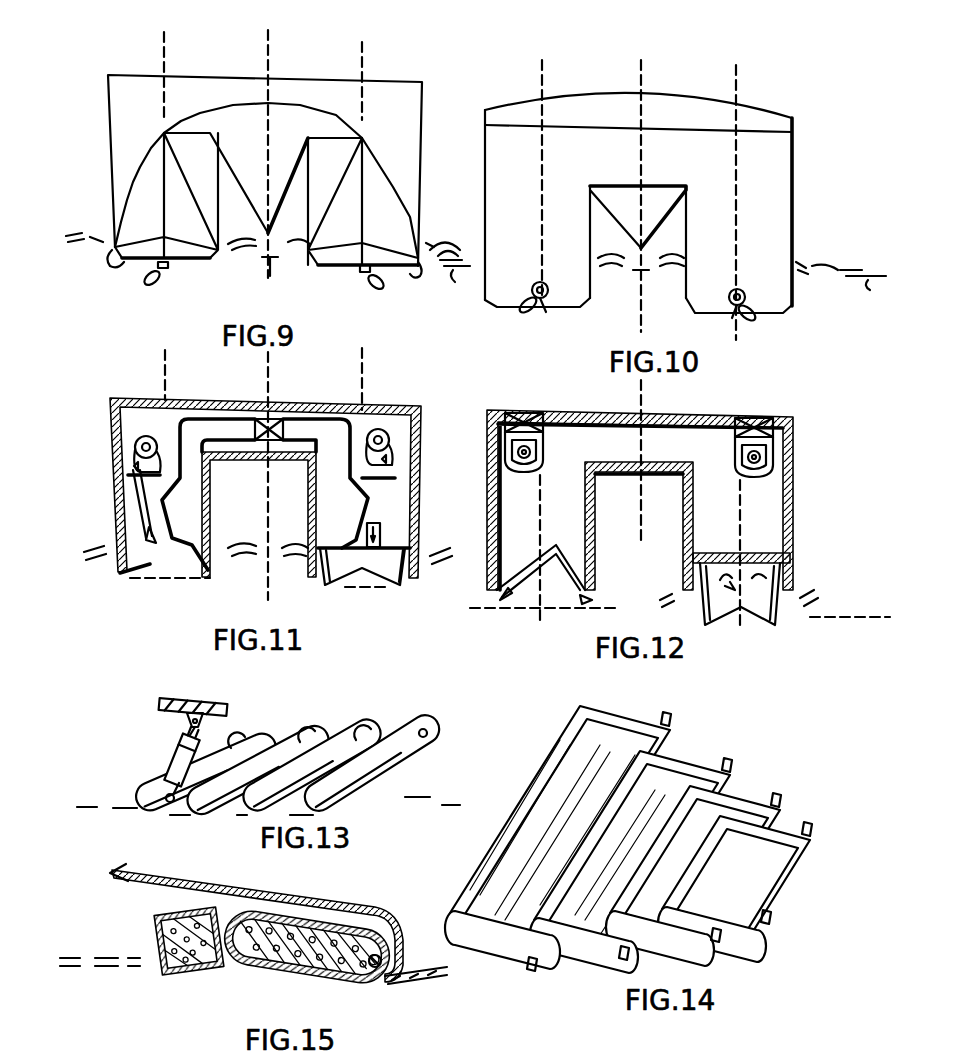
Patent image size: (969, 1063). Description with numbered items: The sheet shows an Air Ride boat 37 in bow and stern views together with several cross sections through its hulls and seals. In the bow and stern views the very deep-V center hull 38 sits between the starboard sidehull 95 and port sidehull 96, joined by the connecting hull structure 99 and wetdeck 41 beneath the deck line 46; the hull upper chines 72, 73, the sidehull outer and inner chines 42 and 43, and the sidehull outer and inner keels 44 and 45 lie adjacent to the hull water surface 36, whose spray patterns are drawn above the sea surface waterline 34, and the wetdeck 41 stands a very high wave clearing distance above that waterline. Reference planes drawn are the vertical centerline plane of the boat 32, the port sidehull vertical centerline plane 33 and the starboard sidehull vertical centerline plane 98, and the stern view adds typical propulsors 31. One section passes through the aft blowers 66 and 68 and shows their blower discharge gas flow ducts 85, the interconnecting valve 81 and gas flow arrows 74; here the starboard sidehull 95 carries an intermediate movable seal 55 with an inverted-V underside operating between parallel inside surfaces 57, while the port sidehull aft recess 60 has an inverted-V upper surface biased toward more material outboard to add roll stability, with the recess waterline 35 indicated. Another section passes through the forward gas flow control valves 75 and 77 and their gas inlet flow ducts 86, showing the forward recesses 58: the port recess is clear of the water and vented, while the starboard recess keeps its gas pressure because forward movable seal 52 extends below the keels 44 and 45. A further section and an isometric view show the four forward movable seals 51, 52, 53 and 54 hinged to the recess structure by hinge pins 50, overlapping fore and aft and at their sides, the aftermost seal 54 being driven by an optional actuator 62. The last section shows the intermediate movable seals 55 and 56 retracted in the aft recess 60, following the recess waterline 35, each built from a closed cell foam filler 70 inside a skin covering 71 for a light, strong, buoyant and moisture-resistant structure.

In FIG. 10, the propulsors 31 is at (765, 314).
In FIG. 9, the vertical centerline plane of the boat 32 is at (268, 62).
In FIG. 10, the vertical centerline plane of the boat 32 is at (641, 174).
In FIG. 11, the vertical centerline plane of the boat 32 is at (262, 504).
In FIG. 12, the vertical centerline plane of the boat 32 is at (641, 522).
In FIG. 9, the port sidehull vertical centerline plane 33 is at (362, 62).
In FIG. 10, the port sidehull vertical centerline plane 33 is at (542, 172).
In FIG. 11, the port sidehull vertical centerline plane 33 is at (165, 376).
In FIG. 12, the port sidehull vertical centerline plane 33 is at (540, 512).
In FIG. 9, the sea surface waterline 34 is at (275, 254).
In FIG. 10, the sea surface waterline 34 is at (641, 274).
In FIG. 11, the sea surface waterline 34 is at (258, 542).
In FIG. 13, the sea surface waterline 34 is at (428, 797).
In FIG. 11, the recess waterline 35 is at (360, 590).
In FIG. 12, the recess waterline 35 is at (740, 626).
In FIG. 15, the recess waterline 35 is at (105, 970).
In FIG. 9, the adjacent to hull water surface 36 is at (240, 245).
In FIG. 10, the adjacent to hull water surface 36 is at (814, 262).
In FIG. 11, the adjacent to hull water surface 36 is at (445, 558).
In FIG. 12, the adjacent to hull water surface 36 is at (820, 602).
In FIG. 9, the boat 37 is at (422, 100).
In FIG. 10, the boat 37 is at (485, 110).
In FIG. 11, the boat 37 is at (330, 400).
In FIG. 12, the boat 37 is at (700, 412).
In FIG. 9, the center hull 38 is at (278, 150).
In FIG. 10, the center hull 38 is at (622, 190).
In FIG. 9, the wetdeck 41 is at (318, 122).
In FIG. 10, the wetdeck 41 is at (680, 200).
In FIG. 11, the wetdeck 41 is at (259, 514).
In FIG. 12, the wetdeck 41 is at (645, 475).
In FIG. 9, the sidehull outer chines 42 is at (470, 302).
In FIG. 10, the sidehull outer chines 42 is at (794, 306).
In FIG. 11, the sidehull outer chines 42 is at (418, 574).
In FIG. 12, the sidehull outer chines 42 is at (793, 588).
In FIG. 9, the sidehull inner chines 43 is at (274, 264).
In FIG. 10, the sidehull inner chines 43 is at (641, 300).
In FIG. 11, the sidehull inner chines 43 is at (238, 576).
In FIG. 12, the sidehull inner chines 43 is at (662, 588).
In FIG. 9, the sidehull outer keels 44 is at (414, 268).
In FIG. 10, the sidehull outer keels 44 is at (784, 316).
In FIG. 11, the sidehull outer keels 44 is at (408, 587).
In FIG. 12, the sidehull outer keels 44 is at (782, 626).
In FIG. 9, the sidehull inner keels 45 is at (336, 270).
In FIG. 10, the sidehull inner keels 45 is at (737, 308).
In FIG. 11, the sidehull inner keels 45 is at (330, 588).
In FIG. 12, the sidehull inner keels 45 is at (700, 610).
In FIG. 9, the deck line 46 is at (422, 82).
In FIG. 10, the deck line 46 is at (793, 132).
In FIG. 11, the deck line 46 is at (421, 406).
In FIG. 13, the hinge pins 50 is at (423, 728).
In FIG. 14, the hinge pins 50 is at (767, 920).
In FIG. 15, the hinge pins 50 is at (380, 966).
In FIG. 13, the forward movable seal 51 is at (436, 748).
In FIG. 14, the forward movable seal 51 is at (800, 890).
In FIG. 12, the forward movable seal 52 is at (772, 628).
In FIG. 13, the forward movable seal 52 is at (366, 735).
In FIG. 14, the forward movable seal 52 is at (785, 815).
In FIG. 13, the forward movable seal 53 is at (318, 732).
In FIG. 14, the forward movable seal 53 is at (683, 765).
In FIG. 13, the forward movable seal 54 is at (255, 745).
In FIG. 14, the forward movable seal 54 is at (555, 745).
In FIG. 11, the intermediate movable seal 55 is at (360, 590).
In FIG. 15, the intermediate movable seal 55 is at (284, 980).
In FIG. 15, the intermediate movable seal 56 is at (174, 973).
In FIG. 11, the inside surfaces 57 is at (342, 546).
In FIG. 12, the inside surfaces 57 is at (700, 565).
In FIG. 12, the forward recesses 58 is at (582, 600).
In FIG. 13, the forward recesses 58 is at (222, 700).
In FIG. 11, the sidehull aft recesses 60 is at (192, 548).
In FIG. 15, the sidehull aft recesses 60 is at (360, 920).
In FIG. 13, the actuator 62 is at (170, 755).
In FIG. 11, the aft blower 66 is at (138, 440).
In FIG. 11, the aft blower 68 is at (390, 440).
In FIG. 15, the closed cell foam filler 70 is at (242, 972).
In FIG. 15, the skin covering 71 is at (232, 915).
In FIG. 9, the hull upper chine 72 is at (390, 170).
In FIG. 9, the hull upper chine 73 is at (140, 165).
In FIG. 11, the gas flow arrows 74 is at (170, 532).
In FIG. 12, the gas flow arrows 74 is at (776, 582).
In FIG. 12, the forward gas flow control valve 75 is at (530, 413).
In FIG. 12, the forward gas flow control valve 77 is at (760, 418).
In FIG. 11, the interconnecting valve 81 is at (262, 419).
In FIG. 11, the blower discharge gas flow ducts 85 is at (382, 504).
In FIG. 12, the gas inlet flow ducts 86 is at (776, 466).
In FIG. 9, the starboard sidehull 95 is at (170, 219).
In FIG. 10, the starboard sidehull 95 is at (751, 249).
In FIG. 11, the starboard sidehull 95 is at (418, 462).
In FIG. 12, the starboard sidehull 95 is at (794, 500).
In FIG. 9, the port sidehull 96 is at (329, 225).
In FIG. 10, the port sidehull 96 is at (509, 249).
In FIG. 11, the port sidehull 96 is at (416, 482).
In FIG. 9, the starboard sidehull vertical centerline plane 98 is at (164, 57).
In FIG. 10, the starboard sidehull vertical centerline plane 98 is at (736, 174).
In FIG. 11, the starboard sidehull vertical centerline plane 98 is at (362, 390).
In FIG. 12, the starboard sidehull vertical centerline plane 98 is at (740, 505).
In FIG. 9, the connecting hull structure 99 is at (210, 117).
In FIG. 11, the connecting hull structure 99 is at (283, 462).